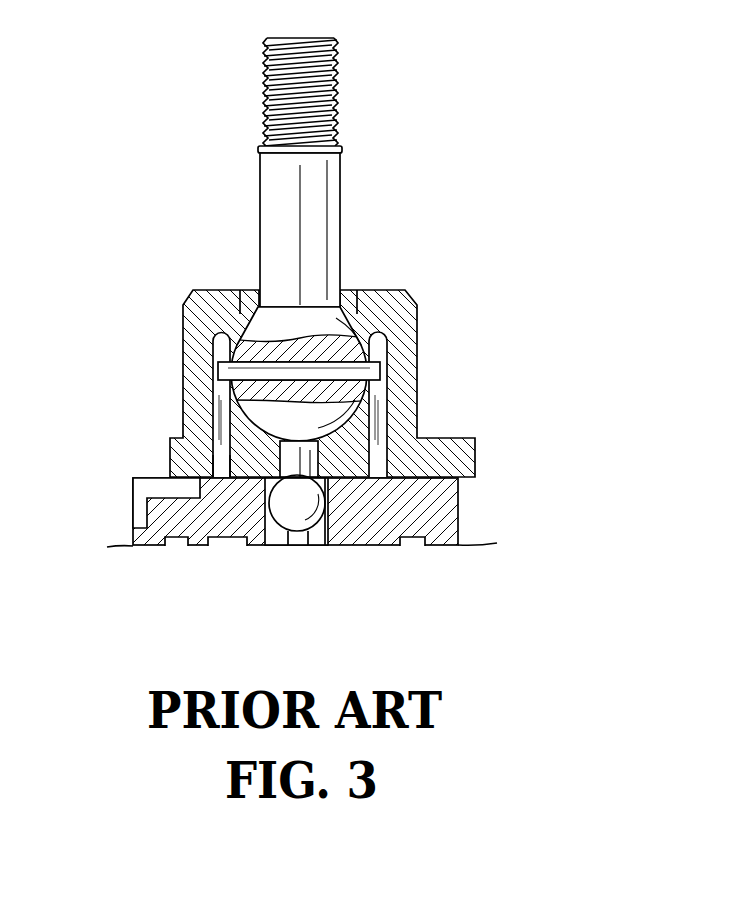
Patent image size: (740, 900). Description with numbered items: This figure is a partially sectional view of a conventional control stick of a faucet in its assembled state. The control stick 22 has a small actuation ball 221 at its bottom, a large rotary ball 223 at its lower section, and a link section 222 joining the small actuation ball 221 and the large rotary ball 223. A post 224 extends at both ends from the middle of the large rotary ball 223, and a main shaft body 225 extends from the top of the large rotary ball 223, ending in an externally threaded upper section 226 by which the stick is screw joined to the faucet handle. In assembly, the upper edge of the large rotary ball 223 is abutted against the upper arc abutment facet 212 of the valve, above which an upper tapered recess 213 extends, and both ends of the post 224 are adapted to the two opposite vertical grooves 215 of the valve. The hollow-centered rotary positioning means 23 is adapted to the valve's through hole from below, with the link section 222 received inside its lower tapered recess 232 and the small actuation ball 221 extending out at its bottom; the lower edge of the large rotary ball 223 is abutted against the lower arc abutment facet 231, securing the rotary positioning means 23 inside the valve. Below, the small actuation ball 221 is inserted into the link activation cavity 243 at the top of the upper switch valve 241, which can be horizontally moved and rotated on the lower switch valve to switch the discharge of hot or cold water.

The control stick 22 is at (229, 246).
The externally threaded upper section 226 is at (322, 64).
The main shaft body 225 is at (327, 183).
The upper arc abutment facet 212 is at (173, 350).
The large rotary ball 223 is at (247, 317).
The upper tapered recess 213 is at (360, 297).
The post 224 is at (201, 348).
The vertical grooves 215 is at (218, 368).
The lower arc abutment facet 231 is at (372, 420).
The rotary positioning means 23 is at (295, 350).
The lower tapered recess 232 is at (225, 462).
The upper switch valve 241 is at (447, 517).
The link section 222 is at (240, 503).
The small actuation ball 221 is at (279, 573).
The link activation cavity 243 is at (283, 527).